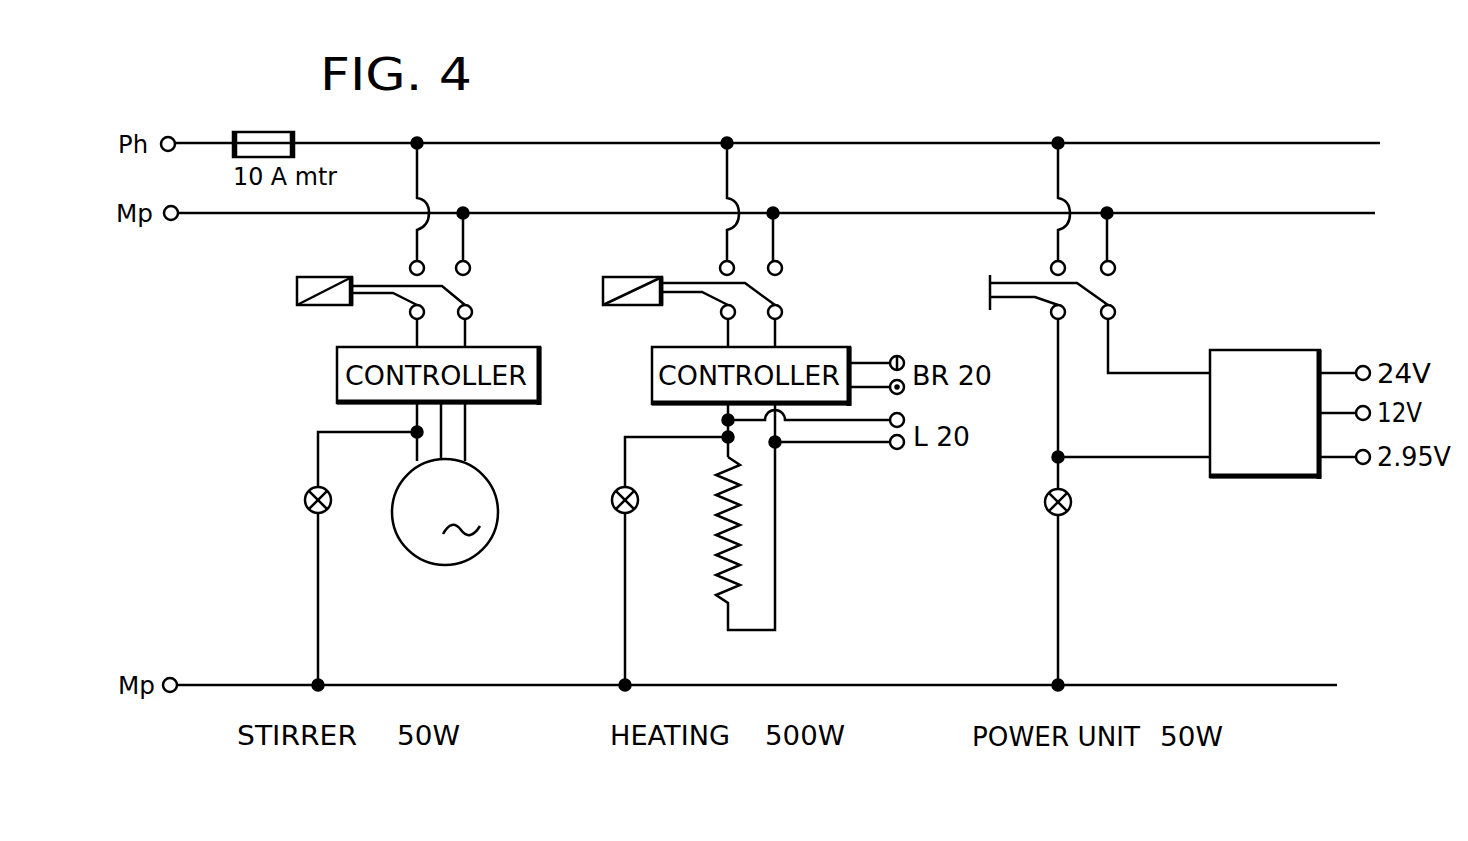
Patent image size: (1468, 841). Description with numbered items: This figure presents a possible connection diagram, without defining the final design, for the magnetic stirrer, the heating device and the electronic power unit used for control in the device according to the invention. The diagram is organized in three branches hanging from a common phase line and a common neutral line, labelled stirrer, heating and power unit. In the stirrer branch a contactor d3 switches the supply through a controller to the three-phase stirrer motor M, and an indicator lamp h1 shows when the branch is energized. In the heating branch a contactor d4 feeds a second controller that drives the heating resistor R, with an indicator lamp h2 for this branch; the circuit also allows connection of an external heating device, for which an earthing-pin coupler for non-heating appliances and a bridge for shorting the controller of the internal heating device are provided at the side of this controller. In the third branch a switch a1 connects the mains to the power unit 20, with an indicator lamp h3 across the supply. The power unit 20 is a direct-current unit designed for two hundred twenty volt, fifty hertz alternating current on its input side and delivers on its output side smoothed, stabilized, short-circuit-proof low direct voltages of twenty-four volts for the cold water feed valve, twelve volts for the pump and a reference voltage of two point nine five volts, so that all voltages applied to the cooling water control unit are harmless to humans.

The power unit 20 is at (1214, 399).
The stirrer contactor d3 is at (362, 295).
The heating contactor d4 is at (672, 295).
The power unit switch a1 is at (1036, 294).
The stirrer indicator lamp h1 is at (346, 559).
The heating indicator lamp h2 is at (653, 561).
The power unit indicator lamp h3 is at (1039, 505).
The heating resistor R is at (732, 536).
The three-phase stirrer motor M is at (445, 512).